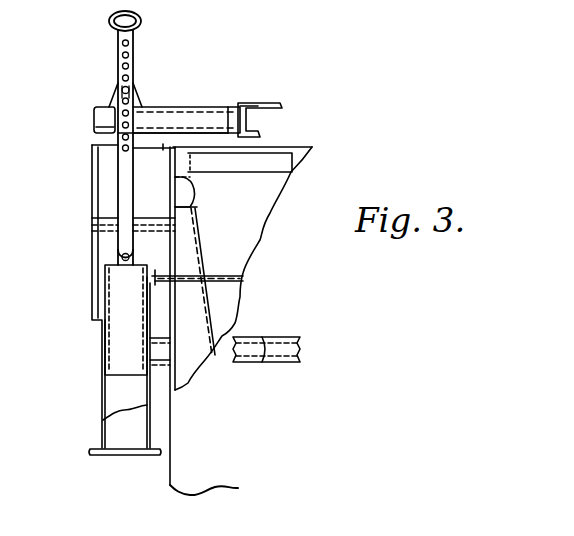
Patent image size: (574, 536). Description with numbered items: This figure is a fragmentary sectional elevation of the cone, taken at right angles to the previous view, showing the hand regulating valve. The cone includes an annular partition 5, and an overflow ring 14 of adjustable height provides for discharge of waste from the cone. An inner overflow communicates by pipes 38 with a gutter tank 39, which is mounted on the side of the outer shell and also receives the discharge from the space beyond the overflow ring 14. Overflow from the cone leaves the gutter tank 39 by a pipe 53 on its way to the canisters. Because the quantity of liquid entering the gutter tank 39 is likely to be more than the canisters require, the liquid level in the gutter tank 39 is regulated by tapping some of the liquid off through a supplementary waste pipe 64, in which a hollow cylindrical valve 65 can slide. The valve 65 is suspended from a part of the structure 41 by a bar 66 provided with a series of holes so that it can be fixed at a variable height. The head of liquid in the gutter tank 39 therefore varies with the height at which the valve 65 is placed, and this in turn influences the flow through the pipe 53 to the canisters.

The bar 66 is at (118, 61).
The gutter tank 39 is at (148, 155).
The part of the structure 41 is at (244, 113).
The overflow ring 14 is at (248, 163).
The pipes 38 is at (193, 203).
The annular partition 5 is at (236, 268).
The pipe 53 is at (277, 340).
The hollow cylindrical valve 65 is at (123, 338).
The supplementary waste pipe 64 is at (110, 440).